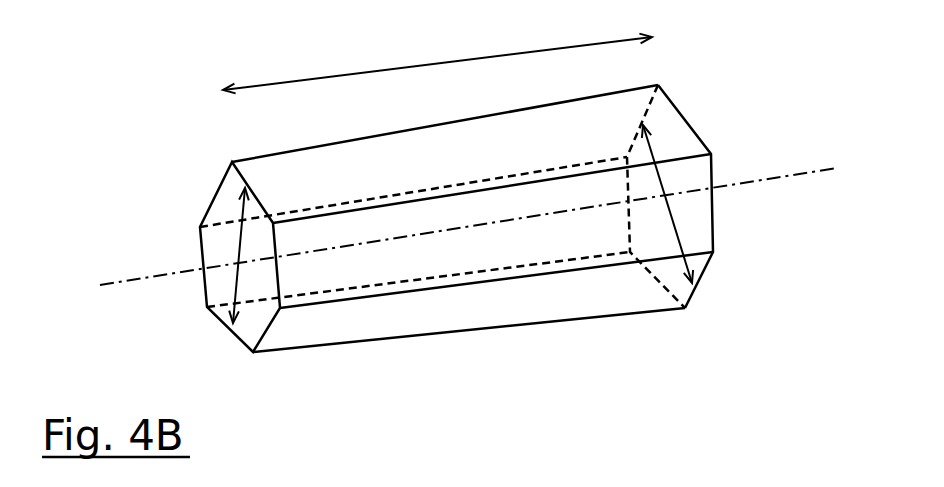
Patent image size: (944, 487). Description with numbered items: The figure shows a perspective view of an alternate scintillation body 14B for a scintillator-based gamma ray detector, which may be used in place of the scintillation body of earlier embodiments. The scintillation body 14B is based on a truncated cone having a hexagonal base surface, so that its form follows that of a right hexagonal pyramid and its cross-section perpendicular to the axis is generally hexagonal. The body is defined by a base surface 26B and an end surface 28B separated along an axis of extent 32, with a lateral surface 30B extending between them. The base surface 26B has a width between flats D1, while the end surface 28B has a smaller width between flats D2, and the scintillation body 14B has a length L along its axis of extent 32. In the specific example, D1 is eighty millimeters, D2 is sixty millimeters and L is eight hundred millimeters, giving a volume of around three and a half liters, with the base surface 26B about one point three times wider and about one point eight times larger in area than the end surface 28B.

The scintillation body 14B is at (450, 197).
The base surface 26B is at (697, 133).
The end surface 28B is at (225, 188).
The lateral surface 30B is at (520, 145).
The axis of extent 32 is at (790, 175).
The length L is at (437, 57).
The width between flats of the base surface D1 is at (680, 238).
The width between flats of the end surface D2 is at (233, 283).